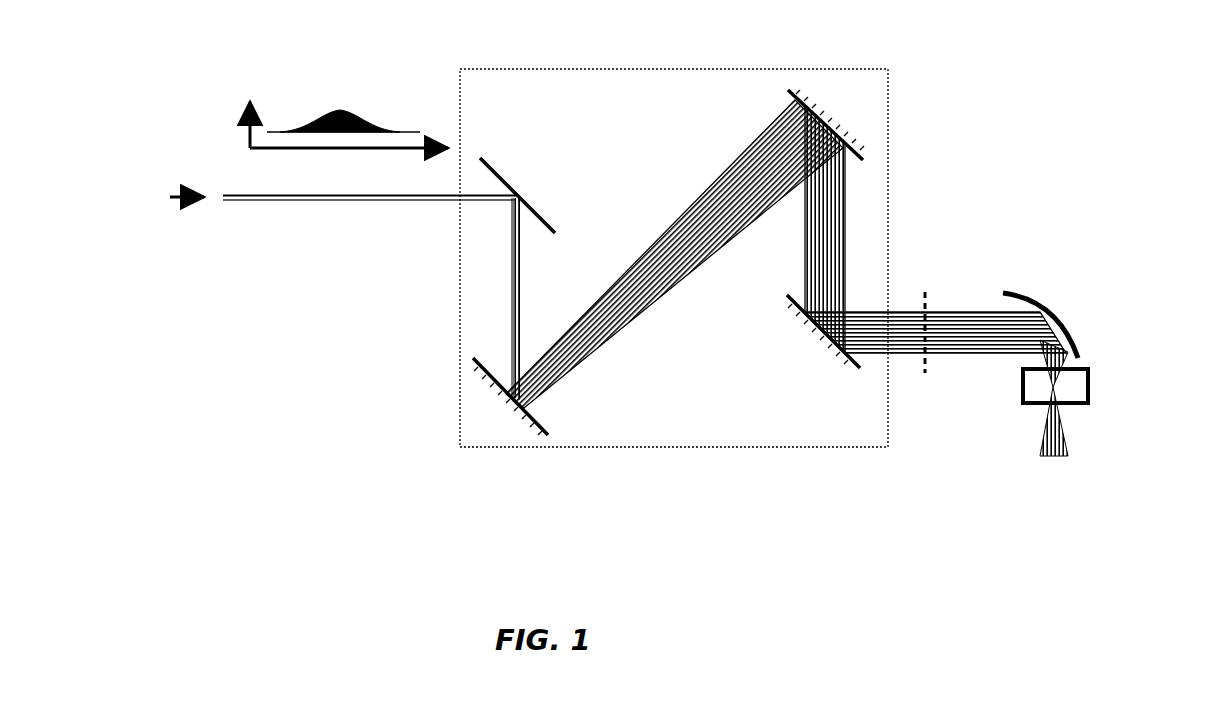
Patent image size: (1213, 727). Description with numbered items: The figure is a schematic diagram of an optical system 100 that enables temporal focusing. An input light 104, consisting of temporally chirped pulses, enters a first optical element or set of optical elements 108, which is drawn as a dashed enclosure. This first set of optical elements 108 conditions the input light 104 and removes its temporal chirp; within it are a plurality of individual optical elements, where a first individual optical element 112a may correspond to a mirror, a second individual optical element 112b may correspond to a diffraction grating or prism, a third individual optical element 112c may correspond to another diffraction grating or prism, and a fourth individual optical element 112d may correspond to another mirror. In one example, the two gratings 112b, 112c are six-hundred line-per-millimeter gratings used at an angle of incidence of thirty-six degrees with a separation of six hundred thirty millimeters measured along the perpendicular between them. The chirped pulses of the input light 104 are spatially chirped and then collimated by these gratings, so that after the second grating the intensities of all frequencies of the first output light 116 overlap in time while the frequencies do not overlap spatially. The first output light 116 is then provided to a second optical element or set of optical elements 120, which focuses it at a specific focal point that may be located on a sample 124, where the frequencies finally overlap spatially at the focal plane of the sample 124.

The optical system 100 is at (207, 350).
The input light 104 is at (317, 155).
The first optical element or set of optical elements 108 is at (462, 260).
The first individual optical element 112a is at (532, 200).
The second individual optical element 112b is at (473, 368).
The third individual optical element 112c is at (808, 93).
The fourth individual optical element 112d is at (795, 312).
The first output light 116 is at (960, 303).
The second optical element or set of optical elements 120 is at (1048, 288).
The sample 124 is at (1088, 390).